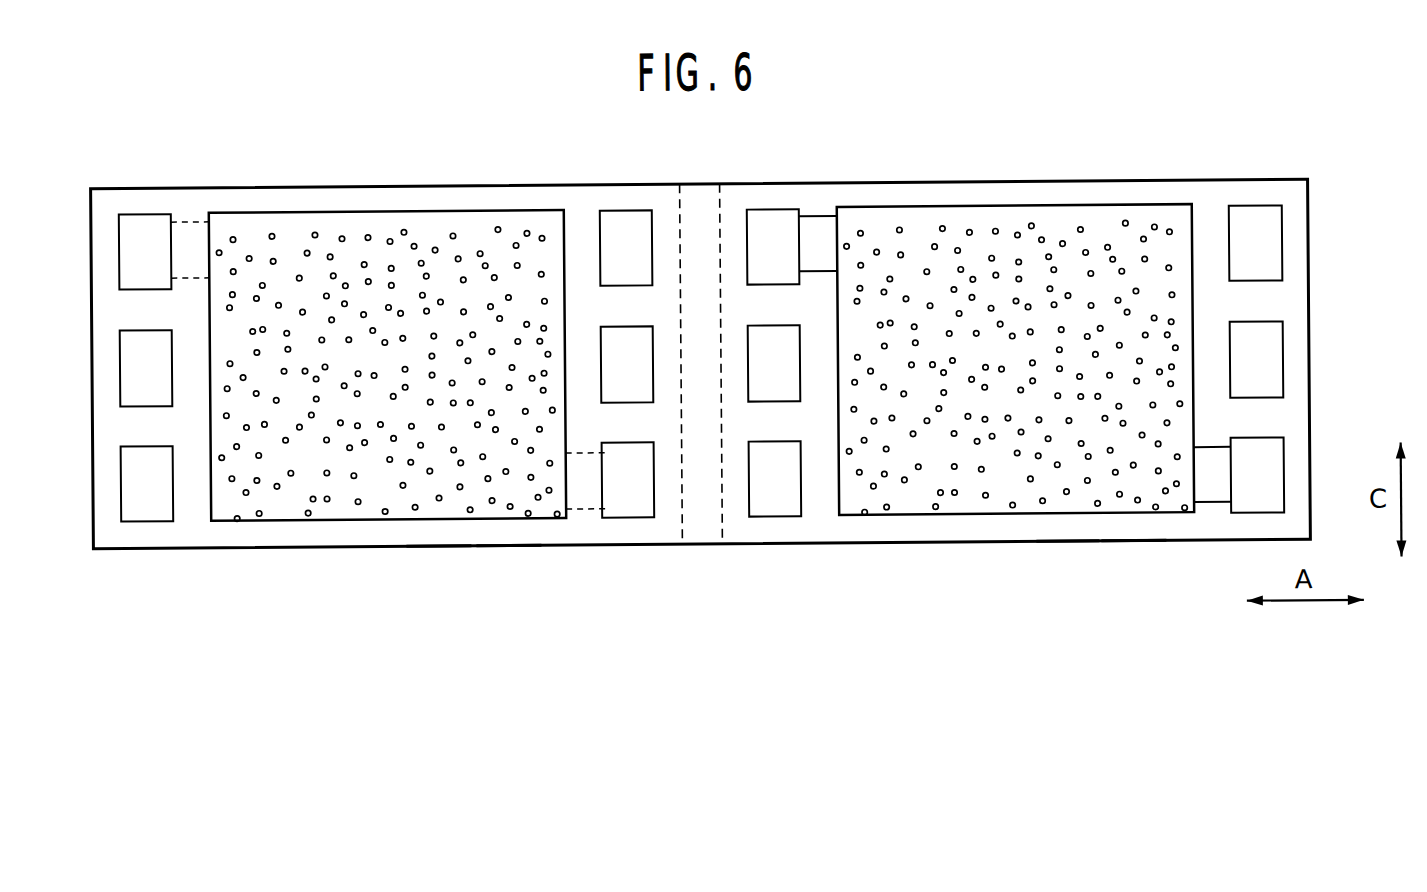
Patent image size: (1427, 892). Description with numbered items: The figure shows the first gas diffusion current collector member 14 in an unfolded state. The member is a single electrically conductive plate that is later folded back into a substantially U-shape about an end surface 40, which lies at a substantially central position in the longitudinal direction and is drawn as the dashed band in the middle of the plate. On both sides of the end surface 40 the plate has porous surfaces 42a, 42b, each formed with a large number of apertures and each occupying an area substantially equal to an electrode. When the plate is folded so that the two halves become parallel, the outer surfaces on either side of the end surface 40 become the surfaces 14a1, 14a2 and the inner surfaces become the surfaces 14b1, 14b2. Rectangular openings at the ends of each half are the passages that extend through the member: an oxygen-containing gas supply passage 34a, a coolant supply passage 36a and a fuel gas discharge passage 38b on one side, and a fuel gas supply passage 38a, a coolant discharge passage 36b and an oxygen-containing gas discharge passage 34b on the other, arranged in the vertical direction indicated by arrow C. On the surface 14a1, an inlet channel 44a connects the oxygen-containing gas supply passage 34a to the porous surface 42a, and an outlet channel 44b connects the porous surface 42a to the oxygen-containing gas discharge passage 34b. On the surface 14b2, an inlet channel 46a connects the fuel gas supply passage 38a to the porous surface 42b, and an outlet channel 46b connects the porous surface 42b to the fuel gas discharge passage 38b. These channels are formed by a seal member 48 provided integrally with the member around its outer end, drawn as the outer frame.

The first gas diffusion current collector member 14 is at (1181, 141).
The seal member 48 is at (1309, 357).
The end surface 40 is at (703, 181).
The porous surface 42a is at (931, 446).
The porous surface 42b is at (303, 453).
The oxygen-containing gas supply passage 34a is at (700, 247).
The oxygen-containing gas discharge passage 34b is at (703, 479).
The coolant supply passage 36a is at (701, 364).
The coolant discharge passage 36b is at (702, 363).
The fuel gas supply passage 38a is at (701, 247).
The fuel gas discharge passage 38b is at (702, 479).
The inlet channel 44a is at (810, 229).
The outlet channel 44b is at (1217, 484).
The inlet channel 46a is at (183, 240).
The outlet channel 46b is at (592, 497).
The surface 14a1 is at (1059, 524).
The surface 14b1 is at (1118, 524).
The surface 14a2 is at (432, 535).
The surface 14b2 is at (490, 535).